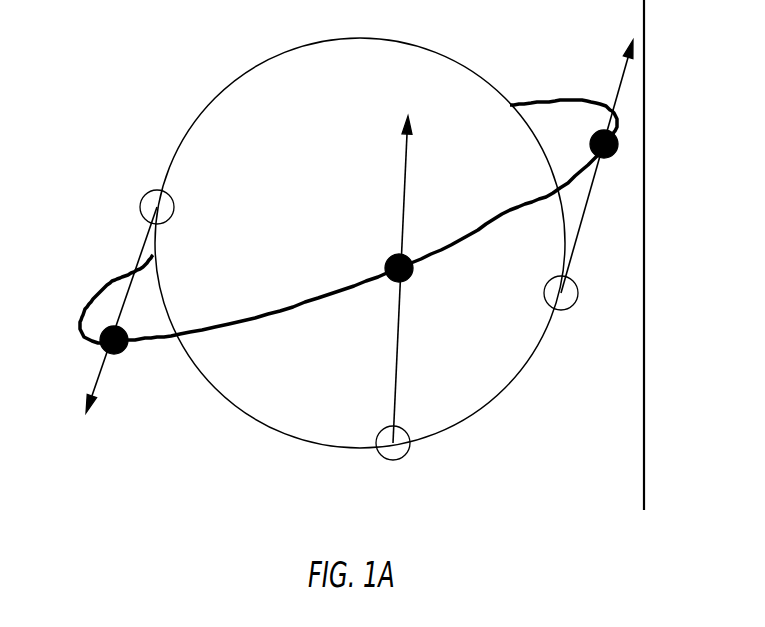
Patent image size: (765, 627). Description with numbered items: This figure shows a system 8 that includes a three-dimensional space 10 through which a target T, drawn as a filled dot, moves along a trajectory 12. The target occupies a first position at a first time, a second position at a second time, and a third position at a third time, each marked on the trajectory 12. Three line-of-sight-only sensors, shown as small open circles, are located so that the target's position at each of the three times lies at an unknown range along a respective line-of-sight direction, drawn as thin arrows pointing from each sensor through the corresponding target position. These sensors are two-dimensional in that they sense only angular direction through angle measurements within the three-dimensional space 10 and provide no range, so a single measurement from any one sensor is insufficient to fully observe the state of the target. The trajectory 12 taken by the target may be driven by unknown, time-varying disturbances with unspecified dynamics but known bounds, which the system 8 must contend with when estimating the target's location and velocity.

The three-dimensional space 10 is at (147, 80).
The trajectory 12 is at (586, 84).
The system 8 is at (649, 552).